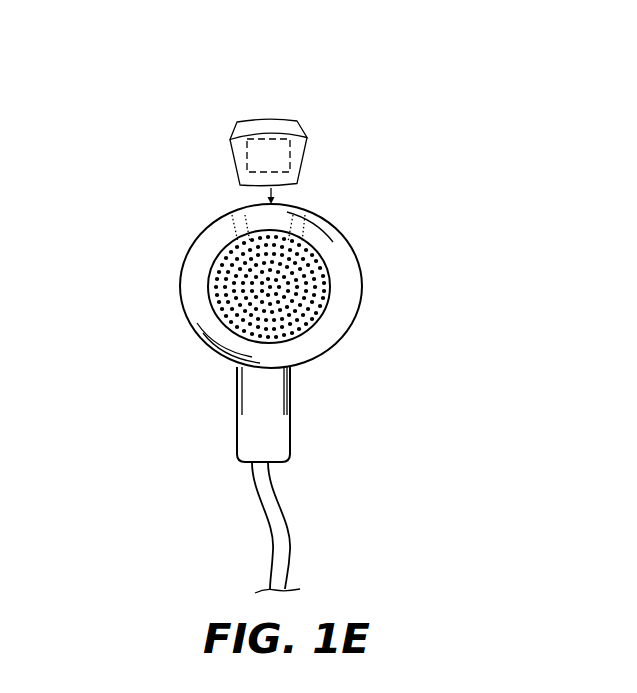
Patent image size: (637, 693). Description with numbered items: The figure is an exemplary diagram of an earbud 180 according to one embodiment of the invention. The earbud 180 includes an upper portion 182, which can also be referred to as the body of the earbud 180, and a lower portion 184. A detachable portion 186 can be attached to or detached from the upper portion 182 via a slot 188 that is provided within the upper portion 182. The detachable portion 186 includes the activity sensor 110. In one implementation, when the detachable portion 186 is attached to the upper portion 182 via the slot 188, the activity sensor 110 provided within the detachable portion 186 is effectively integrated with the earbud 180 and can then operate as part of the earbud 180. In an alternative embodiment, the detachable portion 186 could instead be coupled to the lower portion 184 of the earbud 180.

The earbud 180 is at (362, 209).
The upper portion 182 is at (180, 293).
The lower portion 184 is at (243, 408).
The detachable portion 186 is at (276, 121).
The slot 188 is at (265, 222).
The activity sensor 110 is at (230, 144).